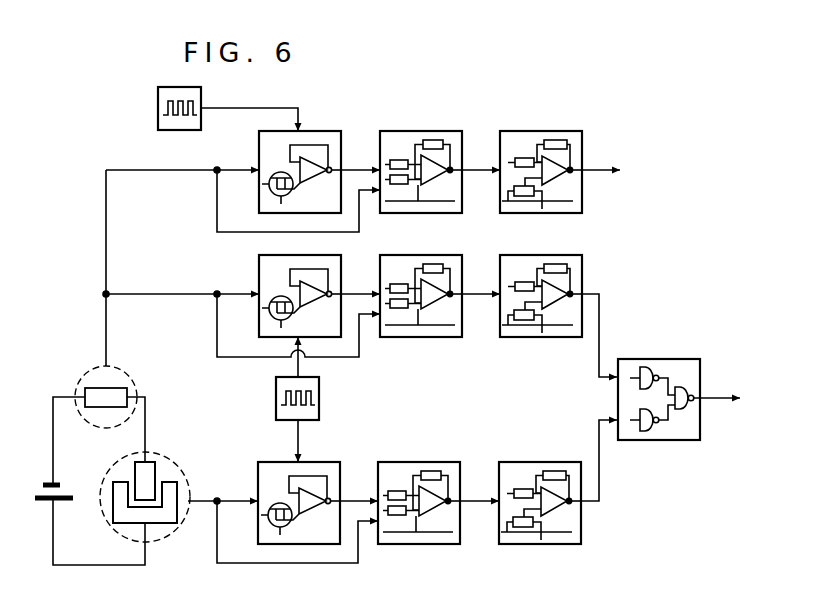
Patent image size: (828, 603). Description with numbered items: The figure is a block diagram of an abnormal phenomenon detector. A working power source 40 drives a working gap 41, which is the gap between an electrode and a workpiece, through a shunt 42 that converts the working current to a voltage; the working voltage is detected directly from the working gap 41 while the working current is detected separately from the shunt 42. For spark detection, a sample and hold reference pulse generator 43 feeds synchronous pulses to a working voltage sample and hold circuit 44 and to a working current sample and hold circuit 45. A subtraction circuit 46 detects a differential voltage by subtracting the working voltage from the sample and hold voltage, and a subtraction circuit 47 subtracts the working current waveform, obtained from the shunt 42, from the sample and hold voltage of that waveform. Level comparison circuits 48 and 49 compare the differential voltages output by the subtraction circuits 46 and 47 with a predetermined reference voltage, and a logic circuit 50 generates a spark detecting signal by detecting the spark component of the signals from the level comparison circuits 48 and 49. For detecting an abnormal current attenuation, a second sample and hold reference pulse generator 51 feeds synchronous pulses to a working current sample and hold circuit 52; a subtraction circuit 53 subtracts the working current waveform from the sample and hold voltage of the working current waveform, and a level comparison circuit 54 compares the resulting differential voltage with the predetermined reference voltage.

The working power source 40 is at (60, 485).
The working gap 41 is at (166, 456).
The shunt 42 is at (84, 383).
The sample and hold reference pulse generator 43 is at (276, 404).
The working voltage sample and hold circuit 44 is at (269, 462).
The working current sample and hold circuit 45 is at (259, 268).
The subtraction circuit 46 is at (397, 462).
The subtraction circuit 47 is at (404, 255).
The level comparison circuit 48 is at (524, 462).
The level comparison circuit 49 is at (536, 255).
The logic circuit 50 is at (646, 359).
The sample and hold reference pulse generator 51 is at (158, 108).
The working current sample and hold circuit 52 is at (316, 131).
The subtraction circuit 53 is at (404, 131).
The level comparison circuit 54 is at (526, 131).